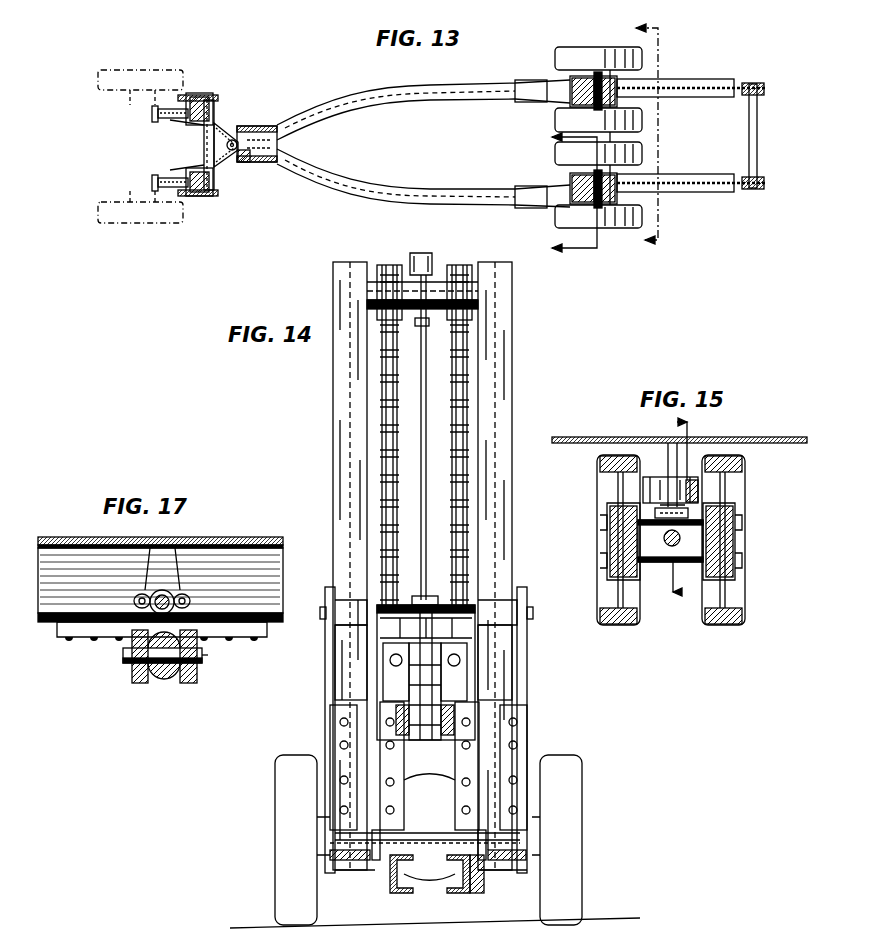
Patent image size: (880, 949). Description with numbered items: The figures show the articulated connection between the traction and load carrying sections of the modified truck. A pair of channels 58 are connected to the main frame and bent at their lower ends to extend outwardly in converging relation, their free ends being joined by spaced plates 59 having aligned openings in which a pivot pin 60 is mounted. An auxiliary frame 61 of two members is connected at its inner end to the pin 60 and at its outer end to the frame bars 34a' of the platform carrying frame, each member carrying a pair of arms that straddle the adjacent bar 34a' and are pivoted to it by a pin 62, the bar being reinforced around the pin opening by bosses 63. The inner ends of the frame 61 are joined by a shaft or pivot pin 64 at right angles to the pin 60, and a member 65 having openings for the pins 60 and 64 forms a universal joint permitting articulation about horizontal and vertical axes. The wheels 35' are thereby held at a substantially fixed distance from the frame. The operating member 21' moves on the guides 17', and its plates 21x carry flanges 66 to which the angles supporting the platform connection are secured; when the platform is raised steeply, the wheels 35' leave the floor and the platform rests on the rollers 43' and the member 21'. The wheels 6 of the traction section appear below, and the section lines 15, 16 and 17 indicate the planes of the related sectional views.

In FIG. 14, the wheel 6 is at (275, 843).
In FIG. 13, the section line 15— 15 is at (560, 196).
In FIG. 13, the section line 16— 16 is at (632, 136).
In FIG. 15, the section line 17— 17 is at (665, 510).
In FIG. 13, the guides 17' is at (155, 149).
In FIG. 14, the guides 17' is at (422, 566).
In FIG. 14, the operating member 21' is at (438, 730).
In FIG. 13, the plates 21x is at (213, 100).
In FIG. 14, the plates 21x is at (333, 693).
In FIG. 13, the frame bars 34a' is at (691, 135).
In FIG. 15, the frame bars 34a' is at (679, 435).
In FIG. 17, the frame bars 34a' is at (161, 573).
In FIG. 13, the wheels 35' is at (577, 138).
In FIG. 15, the wheels 35' is at (692, 555).
In FIG. 13, the rollers 43' is at (736, 136).
In FIG. 13, the channels 58 is at (178, 165).
In FIG. 14, the channels 58 is at (385, 885).
In FIG. 13, the spaced plates 59 is at (228, 132).
In FIG. 13, the pivot pin 60 is at (232, 153).
In FIG. 13, the auxiliary frame 61 is at (423, 144).
In FIG. 13, the pin 62 is at (604, 84).
In FIG. 15, the pin 62 is at (670, 482).
In FIG. 17, the pin 62 is at (176, 590).
In FIG. 13, the bosses 63 is at (582, 76).
In FIG. 15, the bosses 63 is at (700, 490).
In FIG. 17, the bosses 63 is at (158, 590).
In FIG. 13, the shaft or pivot pin 64 is at (246, 163).
In FIG. 13, the member 65 is at (280, 146).
In FIG. 13, the flanges 66 is at (218, 98).
In FIG. 14, the flanges 66 is at (330, 728).